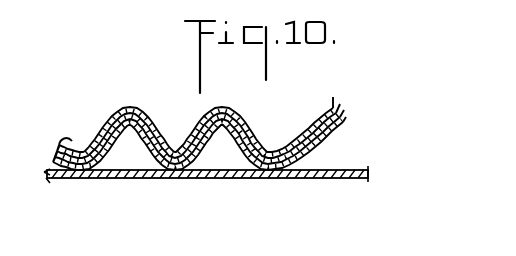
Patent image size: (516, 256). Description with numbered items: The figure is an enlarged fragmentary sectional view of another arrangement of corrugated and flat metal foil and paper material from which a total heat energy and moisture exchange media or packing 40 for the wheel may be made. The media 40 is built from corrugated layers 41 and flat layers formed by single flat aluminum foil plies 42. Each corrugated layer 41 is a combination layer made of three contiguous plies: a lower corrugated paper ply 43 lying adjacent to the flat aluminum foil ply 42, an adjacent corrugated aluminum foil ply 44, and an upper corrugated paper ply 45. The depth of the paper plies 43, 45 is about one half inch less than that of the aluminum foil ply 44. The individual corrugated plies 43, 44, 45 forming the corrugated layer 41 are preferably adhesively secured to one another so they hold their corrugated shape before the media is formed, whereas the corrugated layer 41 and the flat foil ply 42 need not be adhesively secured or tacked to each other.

The total heat energy and moisture exchange media or packing 40 is at (146, 78).
The corrugated layer 41 is at (59, 133).
The flat aluminum foil ply 42 is at (369, 175).
The lower corrugated paper ply 43 is at (345, 122).
The corrugated aluminum foil ply 44 is at (341, 109).
The upper corrugated paper ply 45 is at (333, 97).